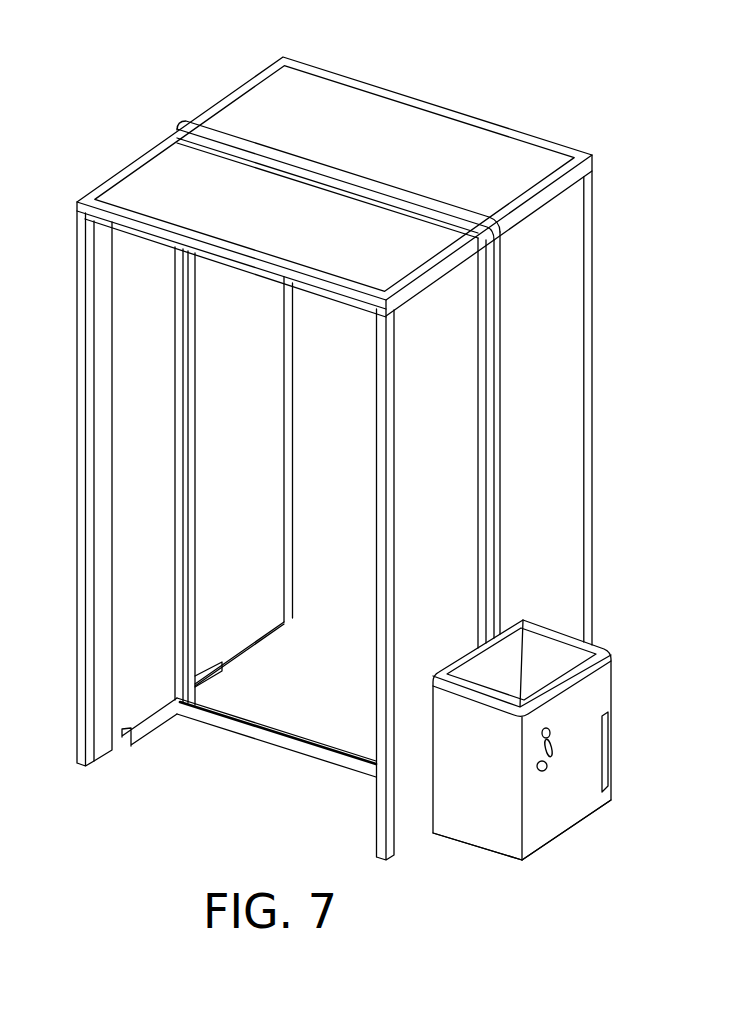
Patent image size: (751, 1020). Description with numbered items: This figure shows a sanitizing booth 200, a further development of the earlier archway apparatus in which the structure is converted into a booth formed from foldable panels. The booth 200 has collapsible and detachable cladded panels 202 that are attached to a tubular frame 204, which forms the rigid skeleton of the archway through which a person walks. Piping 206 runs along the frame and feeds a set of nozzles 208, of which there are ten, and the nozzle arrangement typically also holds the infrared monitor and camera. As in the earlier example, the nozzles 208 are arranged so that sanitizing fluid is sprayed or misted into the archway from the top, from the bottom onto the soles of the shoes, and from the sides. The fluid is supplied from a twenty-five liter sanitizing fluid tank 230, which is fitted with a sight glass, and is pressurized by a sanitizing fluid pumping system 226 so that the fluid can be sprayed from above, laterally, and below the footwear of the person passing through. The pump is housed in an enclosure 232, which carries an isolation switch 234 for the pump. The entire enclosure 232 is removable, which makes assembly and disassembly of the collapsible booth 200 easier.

The booth 200 is at (334, 441).
The cladded panels 202 is at (301, 102).
The tubular frame 204 is at (323, 163).
The piping 206 is at (337, 401).
The nozzles 208 is at (351, 186).
The sanitizing fluid pumping system 226 is at (585, 740).
The sanitizing fluid tank 230 is at (535, 715).
The enclosure 232 is at (469, 740).
The isolation switch 234 is at (548, 826).